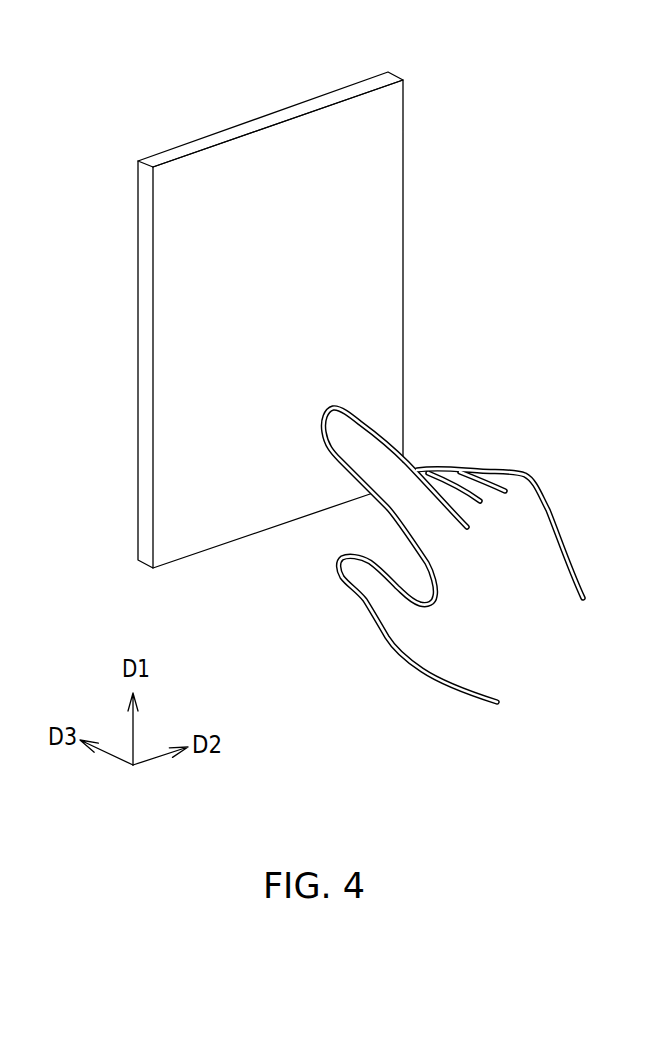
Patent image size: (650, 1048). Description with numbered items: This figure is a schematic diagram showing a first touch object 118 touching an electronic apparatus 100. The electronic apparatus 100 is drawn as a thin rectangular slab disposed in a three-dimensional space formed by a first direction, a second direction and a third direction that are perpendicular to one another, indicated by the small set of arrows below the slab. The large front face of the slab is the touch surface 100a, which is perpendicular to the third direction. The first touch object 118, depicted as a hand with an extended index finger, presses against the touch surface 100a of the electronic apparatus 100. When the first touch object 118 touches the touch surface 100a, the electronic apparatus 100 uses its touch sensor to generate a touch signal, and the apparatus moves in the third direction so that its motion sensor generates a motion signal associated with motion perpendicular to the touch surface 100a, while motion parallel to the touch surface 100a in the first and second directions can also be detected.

The electronic apparatus 100 is at (330, 290).
The touch surface 100a is at (363, 175).
The first touch object 118 is at (473, 468).